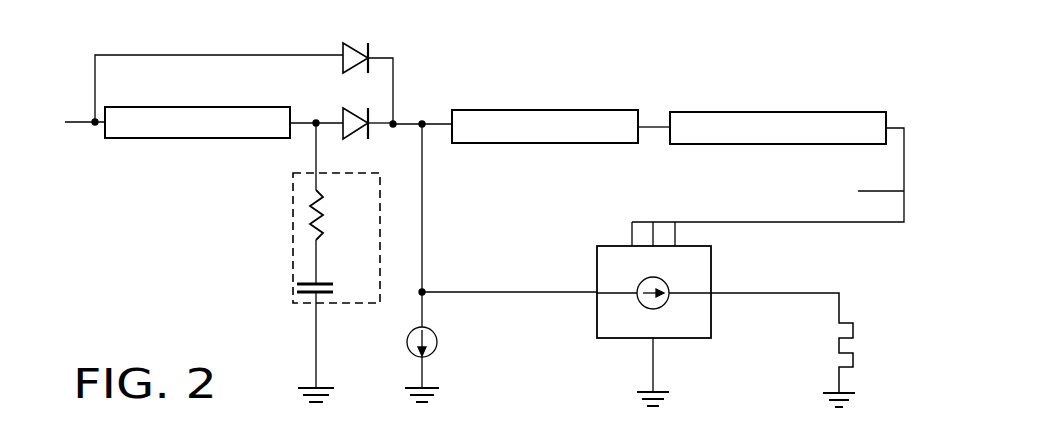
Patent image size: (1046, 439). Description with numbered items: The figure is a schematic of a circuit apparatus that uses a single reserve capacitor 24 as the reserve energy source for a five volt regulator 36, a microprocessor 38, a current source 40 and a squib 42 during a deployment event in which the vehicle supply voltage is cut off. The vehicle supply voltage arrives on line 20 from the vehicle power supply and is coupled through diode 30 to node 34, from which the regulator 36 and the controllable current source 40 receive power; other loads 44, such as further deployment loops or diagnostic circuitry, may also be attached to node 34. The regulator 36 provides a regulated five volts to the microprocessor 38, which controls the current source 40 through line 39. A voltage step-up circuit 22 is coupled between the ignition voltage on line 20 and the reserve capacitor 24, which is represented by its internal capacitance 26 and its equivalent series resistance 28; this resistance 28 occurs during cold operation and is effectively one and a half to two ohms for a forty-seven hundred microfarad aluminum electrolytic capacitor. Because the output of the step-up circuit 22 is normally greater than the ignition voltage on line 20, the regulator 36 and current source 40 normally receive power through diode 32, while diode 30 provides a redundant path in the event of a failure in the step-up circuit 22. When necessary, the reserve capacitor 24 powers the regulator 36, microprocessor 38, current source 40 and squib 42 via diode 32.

The line 20 is at (78, 125).
The voltage step-up circuit 22 is at (200, 140).
The reserve capacitor 24 is at (266, 262).
The internal capacitance 26 is at (322, 293).
The equivalent series resistance 28 is at (315, 200).
The diode 30 is at (345, 46).
The diode 32 is at (353, 113).
The node 34 is at (405, 123).
The 5 volt regulator 36 is at (590, 110).
The microprocessor 38 is at (802, 112).
The line 39 is at (903, 128).
The current source 40 is at (597, 279).
The squib 42 is at (850, 350).
The other loads 44 is at (405, 346).